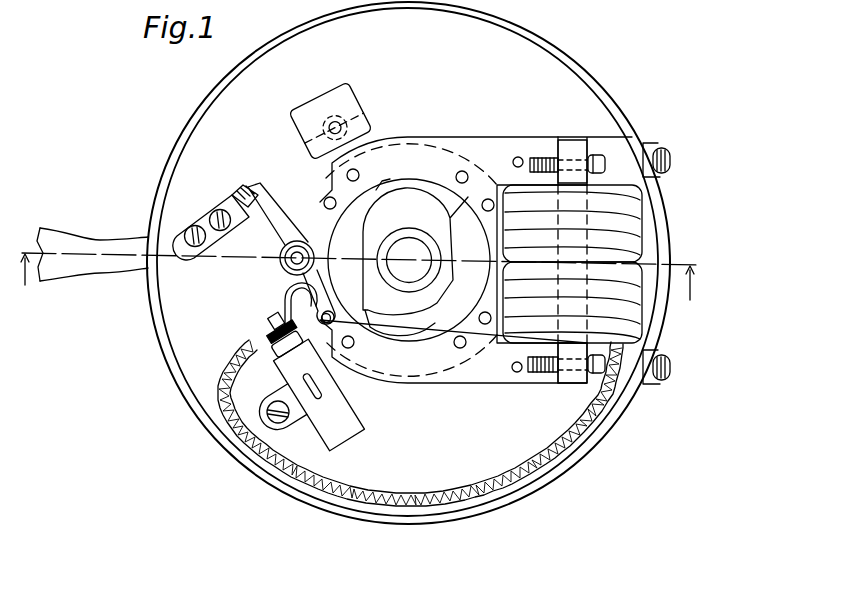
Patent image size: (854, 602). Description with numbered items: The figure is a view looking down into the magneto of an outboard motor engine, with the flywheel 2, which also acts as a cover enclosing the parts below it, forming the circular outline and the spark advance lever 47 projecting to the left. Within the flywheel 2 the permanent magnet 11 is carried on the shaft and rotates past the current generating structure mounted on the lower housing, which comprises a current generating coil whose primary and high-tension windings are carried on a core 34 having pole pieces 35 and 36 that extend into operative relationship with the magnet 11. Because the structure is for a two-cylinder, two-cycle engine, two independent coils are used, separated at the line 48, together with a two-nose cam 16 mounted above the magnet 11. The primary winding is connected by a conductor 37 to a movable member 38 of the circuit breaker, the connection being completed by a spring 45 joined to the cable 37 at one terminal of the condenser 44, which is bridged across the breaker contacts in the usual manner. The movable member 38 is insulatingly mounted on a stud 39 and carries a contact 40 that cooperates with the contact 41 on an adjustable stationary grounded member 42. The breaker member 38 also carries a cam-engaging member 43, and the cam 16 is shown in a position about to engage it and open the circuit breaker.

The flywheel 2 is at (357, 289).
The permanent magnet 11 is at (393, 202).
The cam 16 is at (433, 290).
The core 34 is at (576, 148).
The pole piece 35 is at (496, 158).
The pole piece 36 is at (491, 372).
The conductor 37 is at (356, 490).
The movable member 38 is at (284, 275).
The stud 39 is at (283, 270).
The contact 40 is at (250, 190).
The contact 41 is at (238, 187).
The adjustable stationary grounded member 42 is at (219, 237).
The cam-engaging member 43 is at (358, 318).
The condenser 44 is at (338, 412).
The spring 45 is at (280, 310).
The spark advance lever 47 is at (100, 266).
The line 48 is at (620, 264).